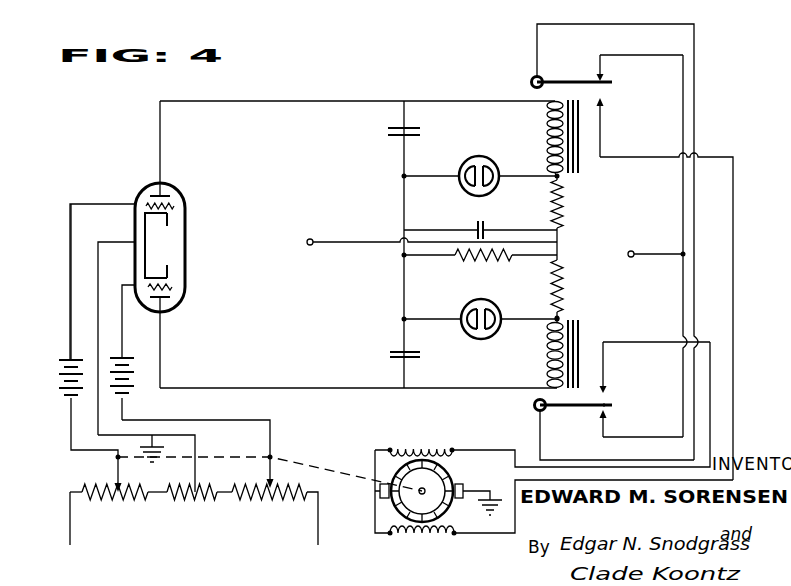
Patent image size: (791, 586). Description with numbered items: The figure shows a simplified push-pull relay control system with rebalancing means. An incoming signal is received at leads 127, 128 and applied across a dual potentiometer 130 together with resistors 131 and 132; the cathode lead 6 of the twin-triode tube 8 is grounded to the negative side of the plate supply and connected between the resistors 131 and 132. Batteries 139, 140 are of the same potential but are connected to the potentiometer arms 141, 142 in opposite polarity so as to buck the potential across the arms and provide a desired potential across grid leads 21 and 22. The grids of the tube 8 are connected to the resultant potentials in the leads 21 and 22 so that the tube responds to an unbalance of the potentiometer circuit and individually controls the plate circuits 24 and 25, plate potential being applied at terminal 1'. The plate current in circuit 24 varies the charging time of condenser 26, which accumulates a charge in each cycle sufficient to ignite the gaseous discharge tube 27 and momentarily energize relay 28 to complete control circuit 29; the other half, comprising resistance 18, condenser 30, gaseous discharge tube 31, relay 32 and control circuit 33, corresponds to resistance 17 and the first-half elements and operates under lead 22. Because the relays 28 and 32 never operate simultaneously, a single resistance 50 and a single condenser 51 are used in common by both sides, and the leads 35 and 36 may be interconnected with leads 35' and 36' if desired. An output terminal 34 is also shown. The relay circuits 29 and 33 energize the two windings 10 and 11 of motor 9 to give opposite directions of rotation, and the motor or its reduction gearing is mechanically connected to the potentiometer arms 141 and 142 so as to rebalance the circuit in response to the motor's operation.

The plate potential terminal 1' is at (424, 248).
The cathode lead 6 is at (116, 234).
The twin-triode tube 8 is at (186, 219).
The motor 9 is at (452, 472).
The motor winding 10 is at (432, 540).
The motor winding 11 is at (430, 440).
The resistance 17 is at (563, 200).
The resistance 18 is at (563, 284).
The grid lead 21 is at (93, 192).
The grid lead 22 is at (129, 276).
The plate circuit 24 is at (160, 164).
The plate circuit 25 is at (162, 352).
The condenser 26 is at (412, 130).
The gaseous discharge tube 27 is at (497, 166).
The relay 28 is at (580, 168).
The control circuit 29 is at (640, 142).
The condenser 30 is at (412, 352).
The gaseous discharge tube 31 is at (499, 310).
The relay 32 is at (580, 332).
The control circuit 33 is at (642, 344).
The output terminal 34 is at (668, 244).
The lead 35 is at (615, 233).
The lead 35' is at (615, 431).
The lead 36 is at (640, 96).
The lead 36' is at (633, 422).
The resistance 50 is at (470, 262).
The condenser 51 is at (487, 226).
The lead 127 is at (66, 540).
The lead 128 is at (320, 538).
The dual potentiometer 130 is at (98, 500).
The resistor 131 is at (175, 500).
The resistor 132 is at (222, 500).
The battery 139 is at (58, 362).
The battery 140 is at (134, 388).
The potentiometer arm 141 is at (113, 466).
The potentiometer arm 142 is at (268, 466).